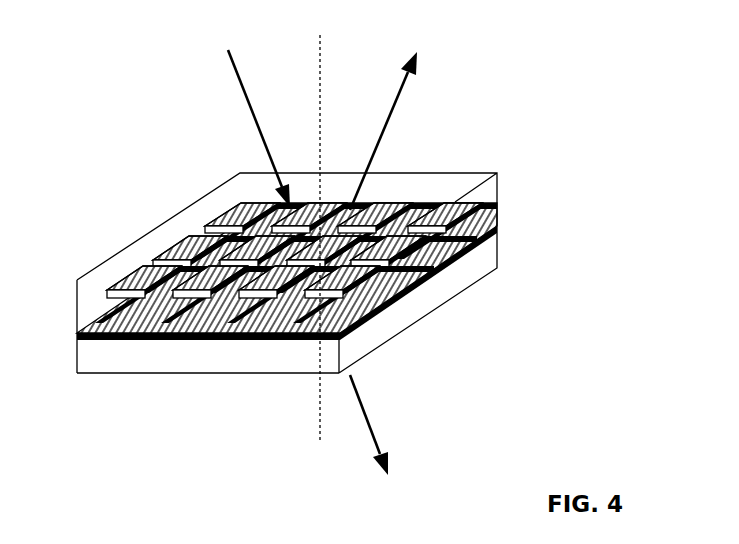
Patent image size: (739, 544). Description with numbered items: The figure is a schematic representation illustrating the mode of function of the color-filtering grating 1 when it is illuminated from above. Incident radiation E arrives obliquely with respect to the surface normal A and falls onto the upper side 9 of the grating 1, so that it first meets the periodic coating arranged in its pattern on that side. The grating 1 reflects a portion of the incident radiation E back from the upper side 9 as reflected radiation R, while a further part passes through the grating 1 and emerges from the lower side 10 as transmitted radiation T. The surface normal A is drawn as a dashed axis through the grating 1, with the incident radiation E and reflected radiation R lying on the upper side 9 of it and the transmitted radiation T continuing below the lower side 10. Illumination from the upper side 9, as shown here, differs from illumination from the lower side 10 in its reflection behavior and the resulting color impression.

The grating 1 is at (278, 300).
The upper side 9 is at (300, 300).
The lower side 10 is at (285, 373).
The surface normal A is at (322, 47).
The incident radiation E is at (250, 103).
The reflected radiation R is at (400, 90).
The transmitted radiation T is at (380, 436).